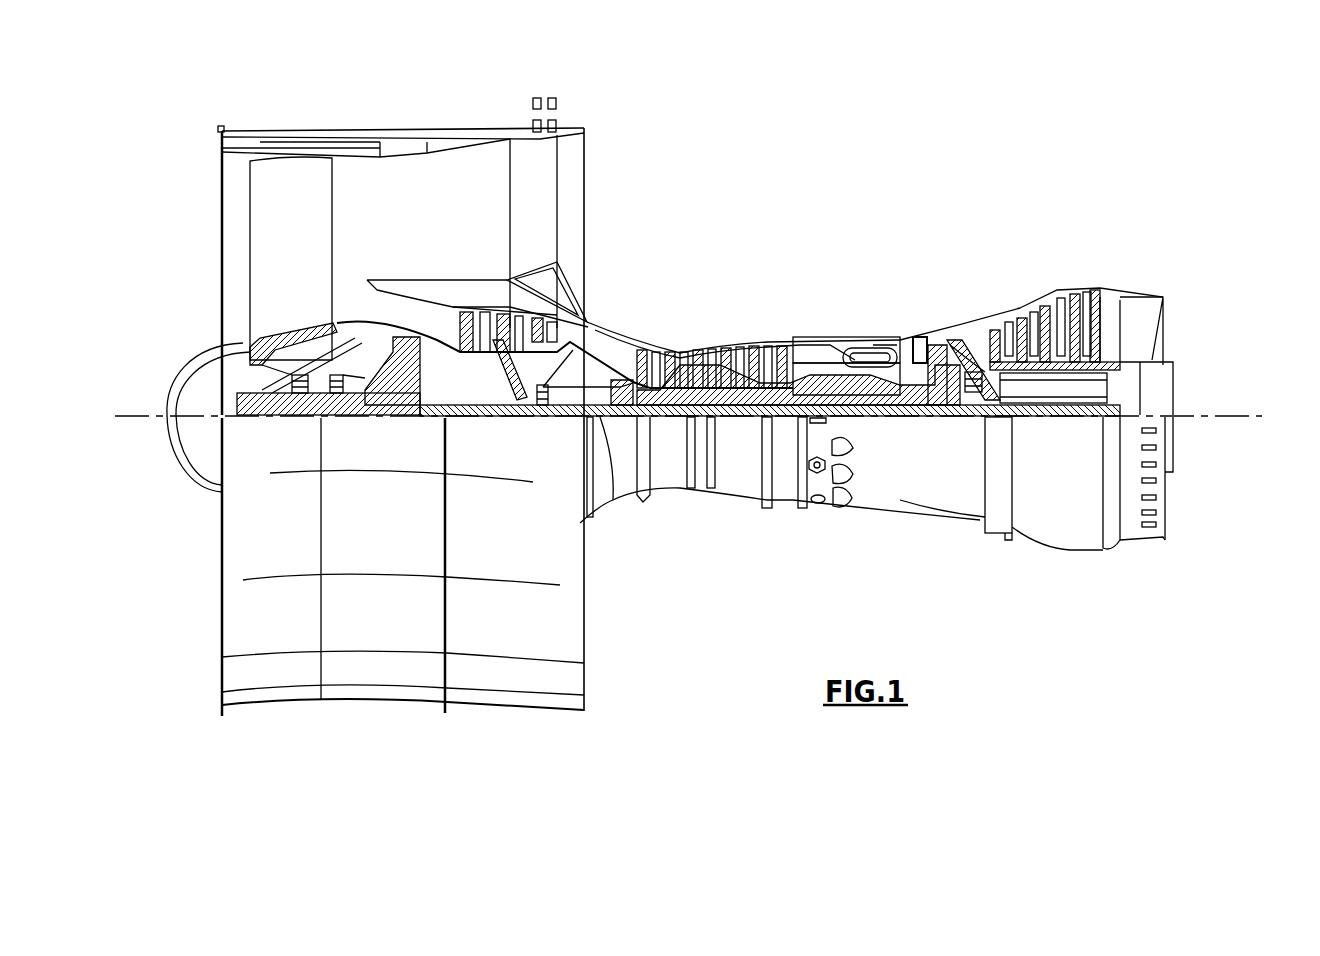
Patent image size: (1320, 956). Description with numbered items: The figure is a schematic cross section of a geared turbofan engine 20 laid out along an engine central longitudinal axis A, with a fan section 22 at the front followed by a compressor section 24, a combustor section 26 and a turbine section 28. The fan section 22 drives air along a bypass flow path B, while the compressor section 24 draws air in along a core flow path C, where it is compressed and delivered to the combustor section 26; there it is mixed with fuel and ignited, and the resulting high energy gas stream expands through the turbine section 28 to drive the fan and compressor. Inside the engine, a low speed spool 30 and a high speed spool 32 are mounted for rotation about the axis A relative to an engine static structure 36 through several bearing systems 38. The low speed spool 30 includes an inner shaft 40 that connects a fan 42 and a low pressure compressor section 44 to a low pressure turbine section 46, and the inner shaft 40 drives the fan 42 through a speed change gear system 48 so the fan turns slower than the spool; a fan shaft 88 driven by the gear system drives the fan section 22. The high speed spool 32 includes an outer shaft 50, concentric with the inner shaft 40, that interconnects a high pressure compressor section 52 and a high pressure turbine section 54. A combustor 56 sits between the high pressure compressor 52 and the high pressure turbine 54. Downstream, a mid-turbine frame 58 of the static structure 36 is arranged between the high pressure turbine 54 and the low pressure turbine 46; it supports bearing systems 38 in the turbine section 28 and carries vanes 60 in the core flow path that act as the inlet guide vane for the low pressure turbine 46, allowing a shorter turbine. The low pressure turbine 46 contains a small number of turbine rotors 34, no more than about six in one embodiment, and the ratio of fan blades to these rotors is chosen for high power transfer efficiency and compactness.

The geared turbofan engine 20 is at (907, 100).
The fan section 22 is at (207, 92).
The compressor section 24 is at (805, 237).
The combustor section 26 is at (813, 237).
The turbine section 28 is at (1125, 237).
The low speed spool 30 is at (740, 420).
The high speed spool 32 is at (787, 363).
The turbine rotors 34 is at (1070, 410).
The engine static structure 36 is at (783, 510).
The bearing systems 38 is at (300, 418).
The inner shaft 40 is at (613, 500).
The fan 42 is at (275, 261).
The low pressure compressor section 44 is at (560, 266).
The low pressure turbine section 46 is at (1050, 303).
The gear system 48 is at (407, 400).
The outer shaft 50 is at (867, 417).
The high pressure compressor section 52 is at (717, 380).
The high pressure turbine section 54 is at (927, 330).
The combustor 56 is at (860, 357).
The mid-turbine frame 58 is at (963, 327).
The vanes 60 is at (1000, 417).
The fan shaft 88 is at (345, 407).
The engine central longitudinal axis A is at (1262, 416).
The bypass flow path B is at (462, 207).
The core flow path C is at (408, 317).